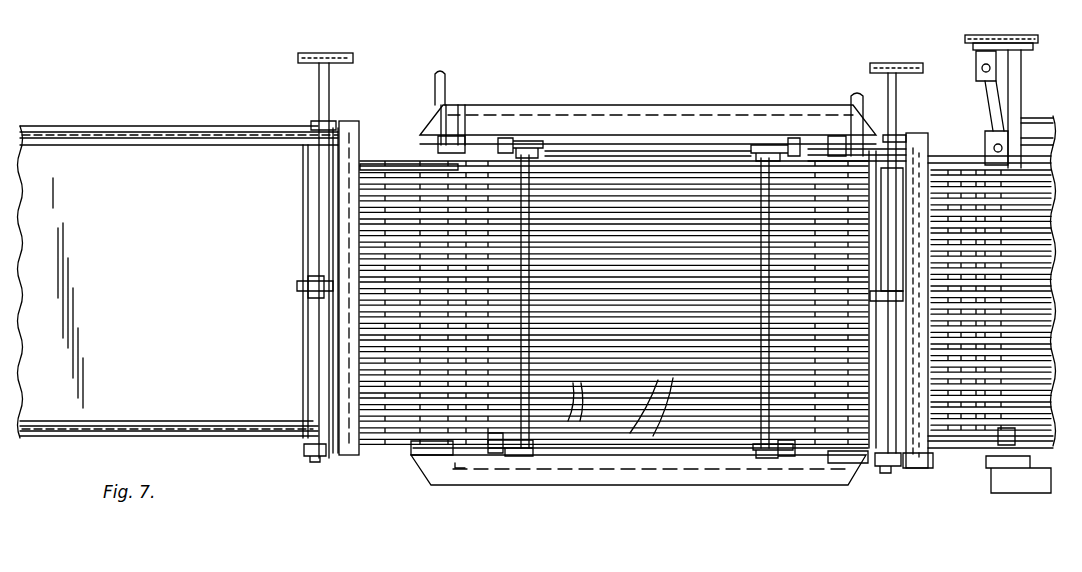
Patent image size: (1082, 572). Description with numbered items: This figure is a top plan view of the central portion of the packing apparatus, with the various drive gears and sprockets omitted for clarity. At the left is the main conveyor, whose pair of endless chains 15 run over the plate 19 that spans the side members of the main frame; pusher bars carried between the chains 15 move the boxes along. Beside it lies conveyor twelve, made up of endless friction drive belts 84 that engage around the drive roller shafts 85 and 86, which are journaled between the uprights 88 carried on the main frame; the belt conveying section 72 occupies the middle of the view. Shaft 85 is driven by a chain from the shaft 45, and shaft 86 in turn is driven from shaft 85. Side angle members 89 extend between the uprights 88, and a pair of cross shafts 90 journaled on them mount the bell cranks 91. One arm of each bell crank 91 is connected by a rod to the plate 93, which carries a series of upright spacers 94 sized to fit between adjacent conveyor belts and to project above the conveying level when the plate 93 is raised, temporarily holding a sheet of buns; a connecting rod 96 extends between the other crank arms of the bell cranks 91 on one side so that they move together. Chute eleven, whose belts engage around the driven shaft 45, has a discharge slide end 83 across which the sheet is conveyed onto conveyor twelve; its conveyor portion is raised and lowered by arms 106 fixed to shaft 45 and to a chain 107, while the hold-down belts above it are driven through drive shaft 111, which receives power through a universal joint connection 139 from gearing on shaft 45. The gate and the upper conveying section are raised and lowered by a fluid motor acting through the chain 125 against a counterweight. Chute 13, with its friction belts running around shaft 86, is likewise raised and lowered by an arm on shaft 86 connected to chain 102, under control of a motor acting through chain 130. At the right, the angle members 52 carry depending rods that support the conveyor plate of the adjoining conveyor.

The plate 19 is at (72, 150).
The endless chains 15 is at (142, 137).
The chain 130 is at (300, 50).
The chain 102 is at (290, 278).
The chute 13 is at (330, 190).
The drive roller shaft 86 is at (442, 70).
The uprights 88 is at (440, 110).
The bell cranks 91 is at (520, 128).
The cross shafts 90 is at (538, 146).
The connecting rod 96 is at (620, 145).
The slat apron 72 is at (645, 152).
The side angle members 89 is at (727, 85).
The drive roller shaft 85 is at (848, 98).
The chain 125 is at (912, 45).
The chain 107 is at (868, 225).
The arms 106 is at (933, 147).
The drive shaft 111 is at (977, 143).
The universal joint connection 139 is at (983, 75).
The shaft 45 is at (1008, 78).
The upright spacers 94 is at (559, 412).
The endless friction drive belts 84 is at (630, 410).
The plate 93 is at (682, 433).
The discharge slide end 83 is at (888, 410).
The angle members 52 is at (1022, 478).